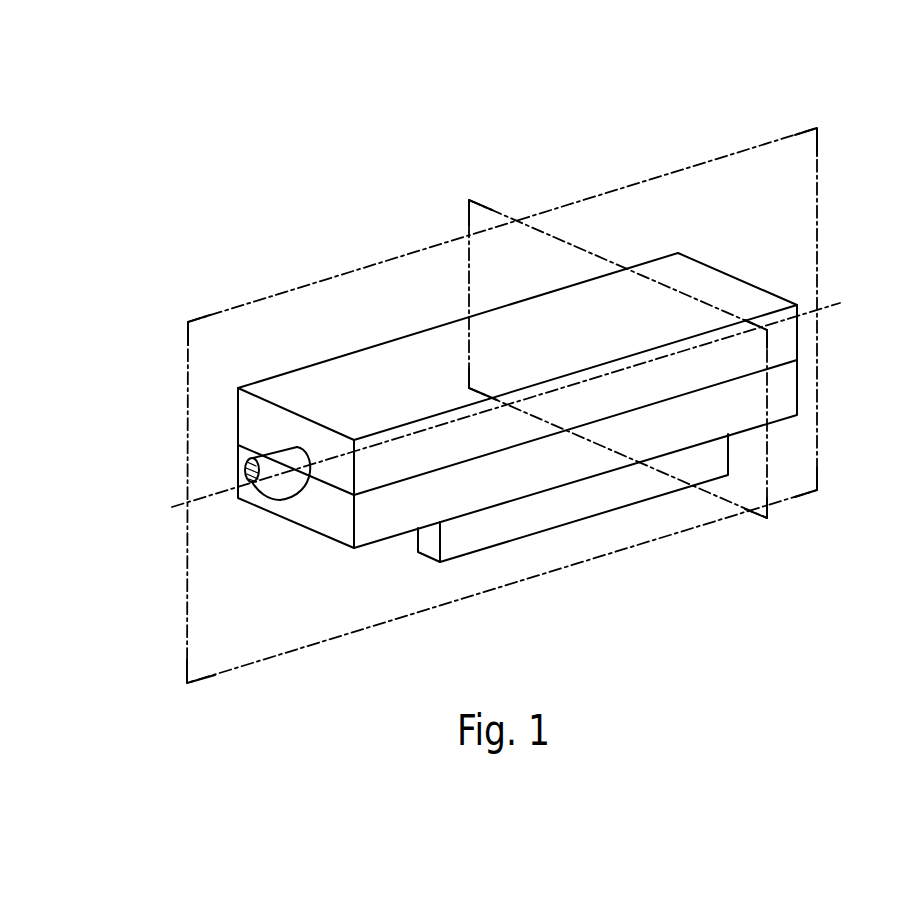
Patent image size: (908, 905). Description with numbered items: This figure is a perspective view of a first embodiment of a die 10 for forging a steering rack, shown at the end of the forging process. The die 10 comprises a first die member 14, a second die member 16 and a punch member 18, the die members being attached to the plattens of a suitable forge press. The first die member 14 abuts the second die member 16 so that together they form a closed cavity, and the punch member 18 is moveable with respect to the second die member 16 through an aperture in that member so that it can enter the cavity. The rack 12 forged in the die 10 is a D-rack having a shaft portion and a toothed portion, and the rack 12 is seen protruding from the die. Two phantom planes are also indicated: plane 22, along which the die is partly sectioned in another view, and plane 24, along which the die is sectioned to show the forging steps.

The die 10 is at (325, 318).
The rack 12 is at (275, 493).
The first die member 14 is at (680, 272).
The second die member 16 is at (377, 528).
The punch member 18 is at (573, 509).
The plane 22 is at (817, 153).
The plane 24 is at (467, 217).